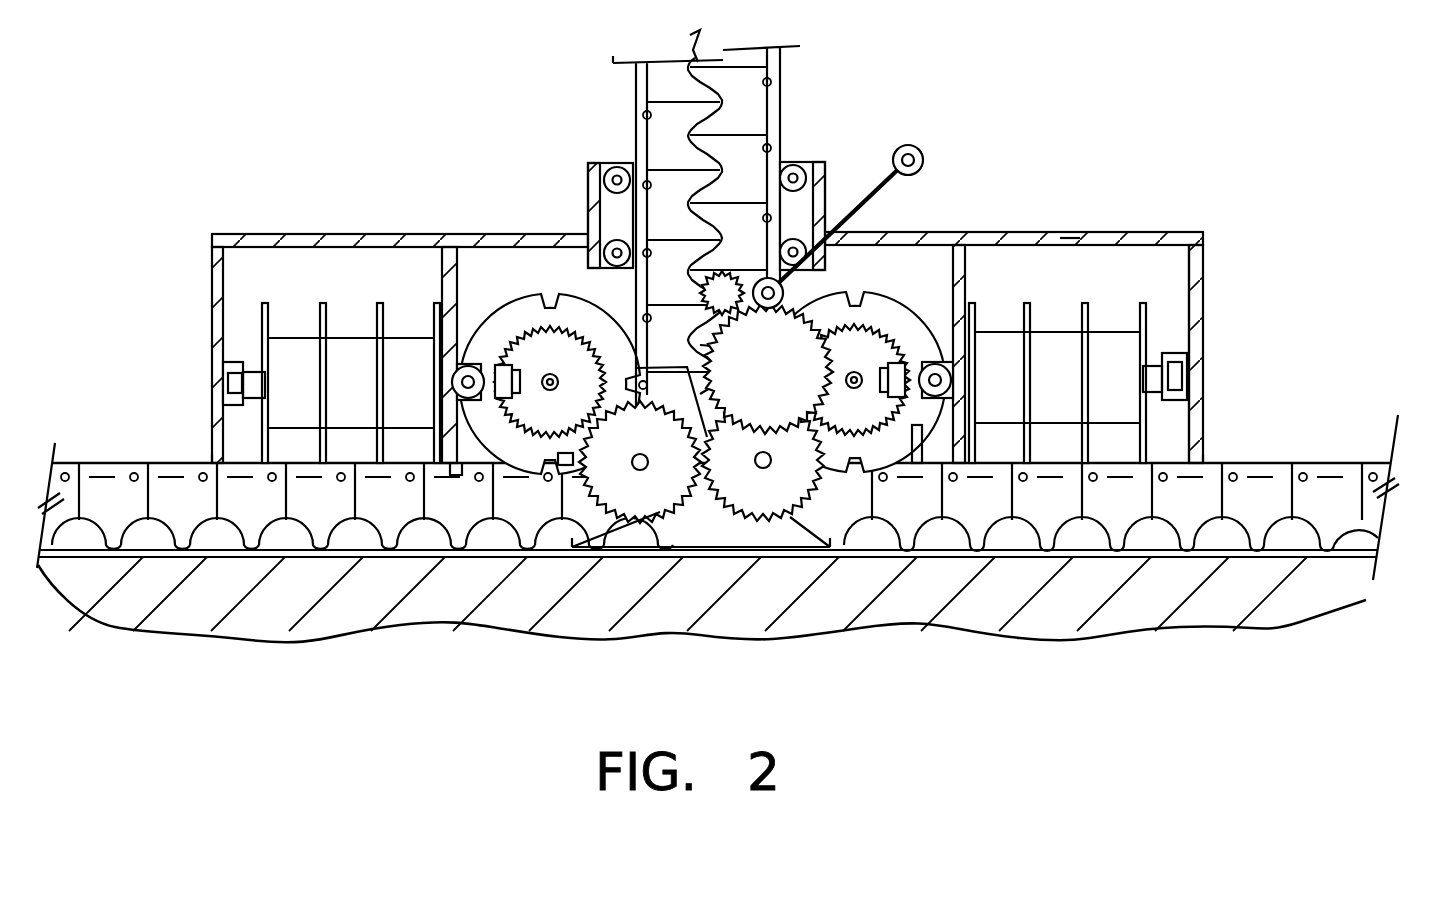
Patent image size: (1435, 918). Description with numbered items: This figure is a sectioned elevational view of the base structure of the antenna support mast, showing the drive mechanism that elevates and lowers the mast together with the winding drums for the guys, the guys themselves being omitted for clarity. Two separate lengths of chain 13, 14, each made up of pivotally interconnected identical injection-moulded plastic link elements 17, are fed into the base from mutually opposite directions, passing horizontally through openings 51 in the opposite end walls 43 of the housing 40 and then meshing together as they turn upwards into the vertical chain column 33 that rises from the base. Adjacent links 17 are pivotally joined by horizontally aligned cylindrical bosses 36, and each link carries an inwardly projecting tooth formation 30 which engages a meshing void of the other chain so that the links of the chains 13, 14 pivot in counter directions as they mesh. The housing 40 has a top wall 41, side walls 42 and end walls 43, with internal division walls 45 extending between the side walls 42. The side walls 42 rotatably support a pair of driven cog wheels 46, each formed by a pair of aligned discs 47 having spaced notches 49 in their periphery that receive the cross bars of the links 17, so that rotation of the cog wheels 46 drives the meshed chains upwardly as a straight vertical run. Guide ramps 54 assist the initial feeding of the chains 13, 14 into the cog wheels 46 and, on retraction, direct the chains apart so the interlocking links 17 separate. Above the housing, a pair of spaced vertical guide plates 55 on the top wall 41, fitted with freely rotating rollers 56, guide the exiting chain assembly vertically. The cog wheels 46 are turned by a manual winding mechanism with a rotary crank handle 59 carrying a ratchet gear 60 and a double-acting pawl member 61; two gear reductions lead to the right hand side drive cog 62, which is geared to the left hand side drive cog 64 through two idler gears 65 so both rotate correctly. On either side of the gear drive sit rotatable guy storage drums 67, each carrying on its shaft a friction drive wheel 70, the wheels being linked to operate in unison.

The chain 13 is at (42, 440).
The chain 14 is at (1368, 428).
The link element 17 is at (721, 541).
The tooth formation 30 is at (1336, 508).
The column of plates 33 is at (636, 103).
The cylindrical boss 36 is at (203, 474).
The housing 40 is at (1208, 225).
The top wall 41 is at (1110, 234).
The side wall 42 is at (1003, 272).
The end wall 43 is at (225, 378).
The internal division wall 45 is at (436, 258).
The cog wheel 46 is at (456, 475).
The disc 47 is at (562, 466).
The notch 49 is at (478, 300).
The opening 51 is at (215, 462).
The guide ramp 54 is at (580, 556).
The guide plate 55 is at (588, 195).
The roller 56 is at (600, 172).
The crank handle 59 is at (886, 182).
The ratchet gear 60 is at (720, 327).
The double-acting pawl member 61 is at (713, 278).
The right hand side drive cog 62 is at (840, 363).
The left hand side drive cog 64 is at (534, 365).
The idler gear 65 is at (624, 506).
The guy storage drum 67 is at (262, 330).
The friction drive wheel 70 is at (524, 447).